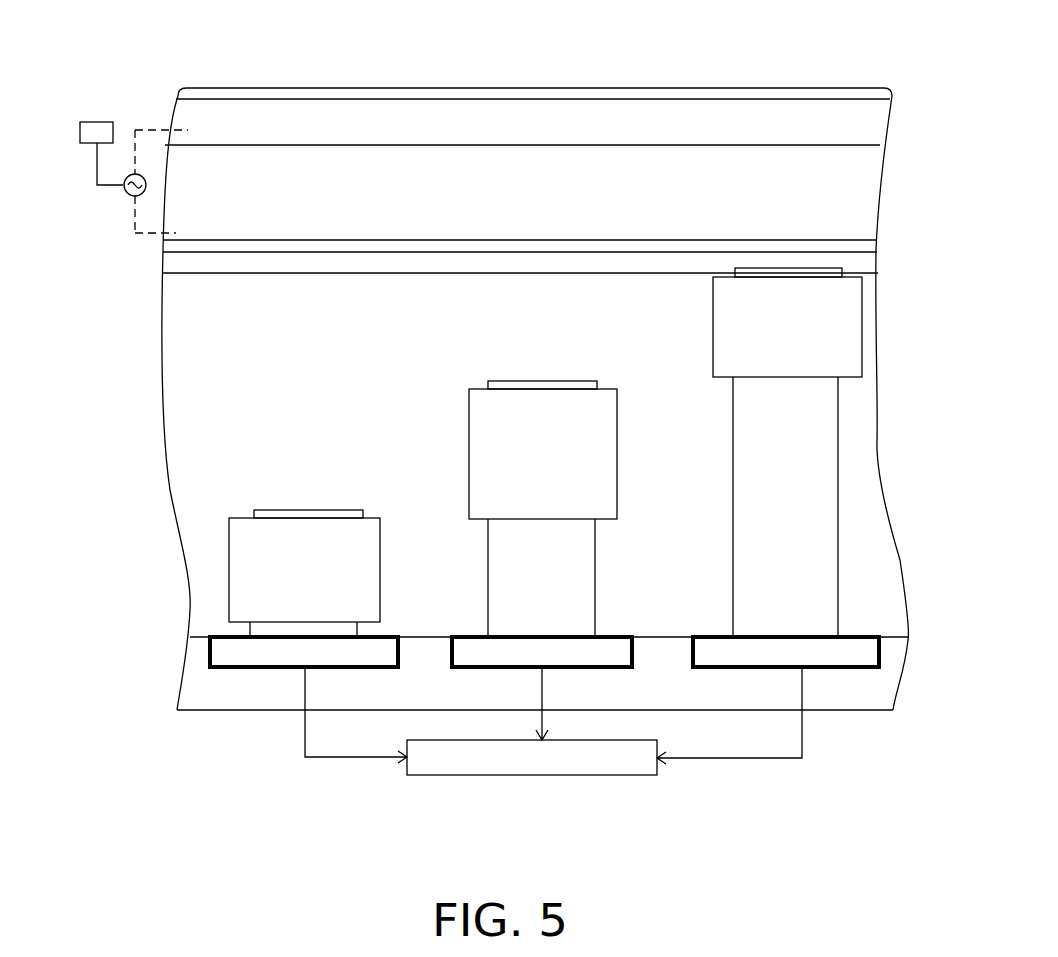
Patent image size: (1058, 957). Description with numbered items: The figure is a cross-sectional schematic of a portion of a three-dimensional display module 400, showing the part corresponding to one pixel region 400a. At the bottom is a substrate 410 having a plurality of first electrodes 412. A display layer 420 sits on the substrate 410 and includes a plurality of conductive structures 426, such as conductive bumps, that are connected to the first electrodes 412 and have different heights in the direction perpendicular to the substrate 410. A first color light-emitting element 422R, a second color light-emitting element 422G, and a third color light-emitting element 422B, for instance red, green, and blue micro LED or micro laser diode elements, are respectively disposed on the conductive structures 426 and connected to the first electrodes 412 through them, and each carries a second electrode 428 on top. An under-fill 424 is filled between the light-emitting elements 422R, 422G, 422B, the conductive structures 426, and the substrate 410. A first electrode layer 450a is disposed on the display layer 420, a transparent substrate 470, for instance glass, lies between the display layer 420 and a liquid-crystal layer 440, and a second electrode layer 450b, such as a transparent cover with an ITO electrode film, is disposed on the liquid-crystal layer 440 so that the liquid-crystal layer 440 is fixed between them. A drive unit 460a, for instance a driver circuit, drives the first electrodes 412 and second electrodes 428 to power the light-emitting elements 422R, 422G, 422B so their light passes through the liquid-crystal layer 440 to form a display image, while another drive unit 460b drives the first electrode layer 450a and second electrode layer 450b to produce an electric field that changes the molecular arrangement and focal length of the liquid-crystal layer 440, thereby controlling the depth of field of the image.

The three-dimensional display module 400 is at (946, 30).
The pixel region 400a is at (545, 88).
The substrate 410 is at (198, 682).
The first electrode 412 is at (245, 647).
The display layer 420 is at (896, 461).
The first color light-emitting element 422R is at (257, 558).
The second color light-emitting element 422G is at (480, 467).
The third color light-emitting element 422B is at (852, 328).
The under-fill 424 is at (233, 386).
The conductive structure 426 is at (258, 630).
The second electrode 428 is at (530, 382).
The liquid-crystal layer 440 is at (168, 210).
The first electrode layer 450a is at (176, 243).
The second electrode layer 450b is at (870, 128).
The drive unit 460a is at (507, 760).
The drive unit 460b is at (80, 132).
The transparent substrate 470 is at (178, 263).